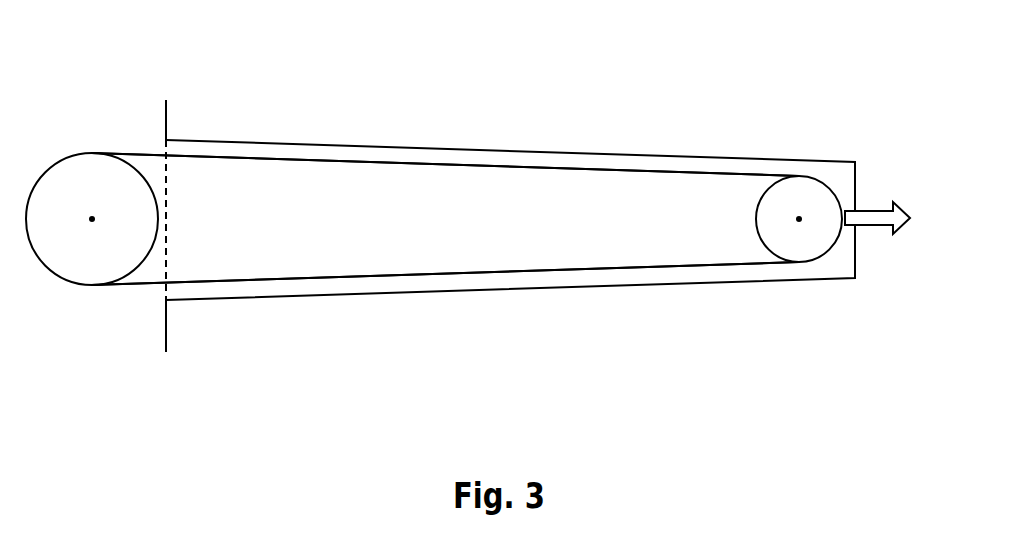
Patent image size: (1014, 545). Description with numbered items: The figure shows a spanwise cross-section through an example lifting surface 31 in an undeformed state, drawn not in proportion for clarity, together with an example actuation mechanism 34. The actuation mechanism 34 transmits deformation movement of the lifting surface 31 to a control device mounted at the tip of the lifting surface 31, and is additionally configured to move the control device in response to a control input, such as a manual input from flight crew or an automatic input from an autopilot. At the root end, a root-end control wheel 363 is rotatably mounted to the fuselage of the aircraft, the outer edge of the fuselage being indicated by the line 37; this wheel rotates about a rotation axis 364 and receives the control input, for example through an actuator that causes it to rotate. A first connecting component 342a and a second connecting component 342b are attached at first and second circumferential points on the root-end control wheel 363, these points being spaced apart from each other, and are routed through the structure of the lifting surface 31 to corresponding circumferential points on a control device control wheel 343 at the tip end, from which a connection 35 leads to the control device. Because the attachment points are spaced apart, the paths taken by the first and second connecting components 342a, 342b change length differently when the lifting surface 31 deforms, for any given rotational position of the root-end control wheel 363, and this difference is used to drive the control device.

The lifting surface 31 is at (323, 227).
The actuation mechanism 34 is at (666, 134).
The connection to a control device 35 is at (872, 217).
The outer edge of the fuselage 37 is at (170, 122).
The first connecting component 342a is at (437, 165).
The second connecting component 342b is at (392, 273).
The control device control wheel 343 is at (815, 238).
The root-end control wheel 363 is at (75, 173).
The rotation axis 364 is at (92, 223).